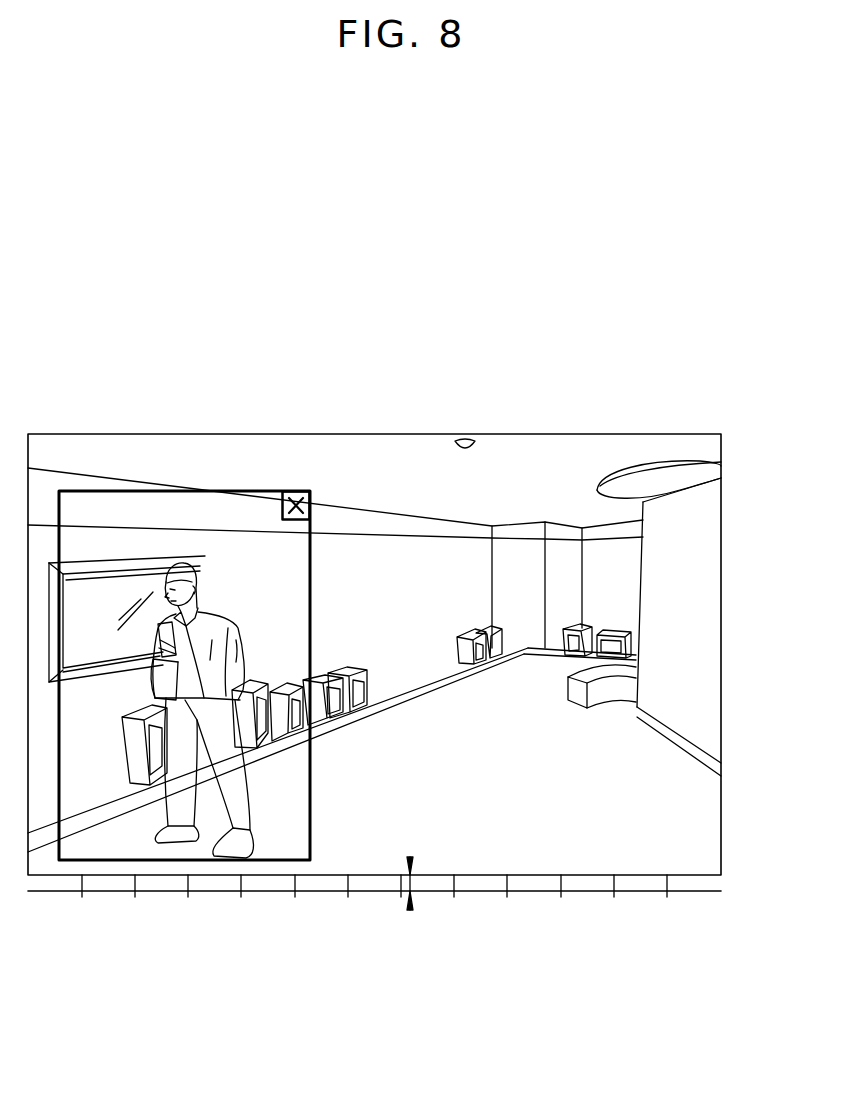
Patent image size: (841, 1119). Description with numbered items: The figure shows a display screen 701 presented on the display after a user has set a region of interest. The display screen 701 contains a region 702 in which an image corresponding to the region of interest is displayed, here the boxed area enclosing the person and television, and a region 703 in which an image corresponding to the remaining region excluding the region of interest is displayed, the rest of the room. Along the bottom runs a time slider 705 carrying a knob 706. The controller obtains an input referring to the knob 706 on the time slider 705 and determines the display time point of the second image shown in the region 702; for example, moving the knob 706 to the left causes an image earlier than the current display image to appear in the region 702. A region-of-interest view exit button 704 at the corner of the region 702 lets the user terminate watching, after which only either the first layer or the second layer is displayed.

The display screen 701 is at (740, 366).
The region in which an image corresponding to the region of interest is displayed 702 is at (134, 491).
The region in which an image corresponding to a remaining region excluding the regio 703 is at (577, 452).
The region-of-interest view exit button 704 is at (293, 491).
The time slider 705 is at (213, 883).
The knob 706 is at (410, 883).